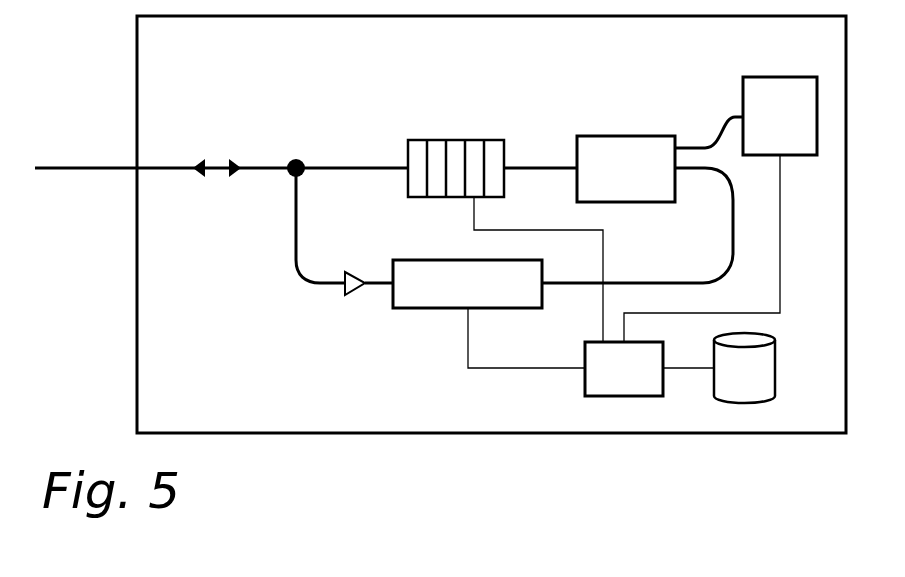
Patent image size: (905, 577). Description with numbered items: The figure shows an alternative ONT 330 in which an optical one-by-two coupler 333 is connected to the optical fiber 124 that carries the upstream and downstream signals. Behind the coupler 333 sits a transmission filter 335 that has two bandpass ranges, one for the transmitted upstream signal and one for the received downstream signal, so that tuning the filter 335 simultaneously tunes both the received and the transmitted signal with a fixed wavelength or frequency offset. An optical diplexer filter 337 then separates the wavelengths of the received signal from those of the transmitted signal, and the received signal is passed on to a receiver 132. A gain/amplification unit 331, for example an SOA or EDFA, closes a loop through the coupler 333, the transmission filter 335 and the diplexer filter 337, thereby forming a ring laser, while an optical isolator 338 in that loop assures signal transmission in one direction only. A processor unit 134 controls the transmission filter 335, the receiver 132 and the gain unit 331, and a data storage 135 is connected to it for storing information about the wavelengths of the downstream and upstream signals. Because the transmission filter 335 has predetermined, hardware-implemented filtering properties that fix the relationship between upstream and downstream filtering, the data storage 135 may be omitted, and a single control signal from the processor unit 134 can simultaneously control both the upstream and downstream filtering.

The ONT 330 is at (491, 224).
The optical fiber 124 is at (90, 178).
The optical 1×2 coupler 333 is at (295, 158).
The transmission filter 335 is at (411, 198).
The optical diplexer filter 337 is at (642, 200).
The receiver 132 is at (720, 209).
The optical isolator 338 is at (345, 295).
The gain/amplification unit 331 is at (489, 314).
The processor unit 134 is at (649, 369).
The data storage 135 is at (744, 368).